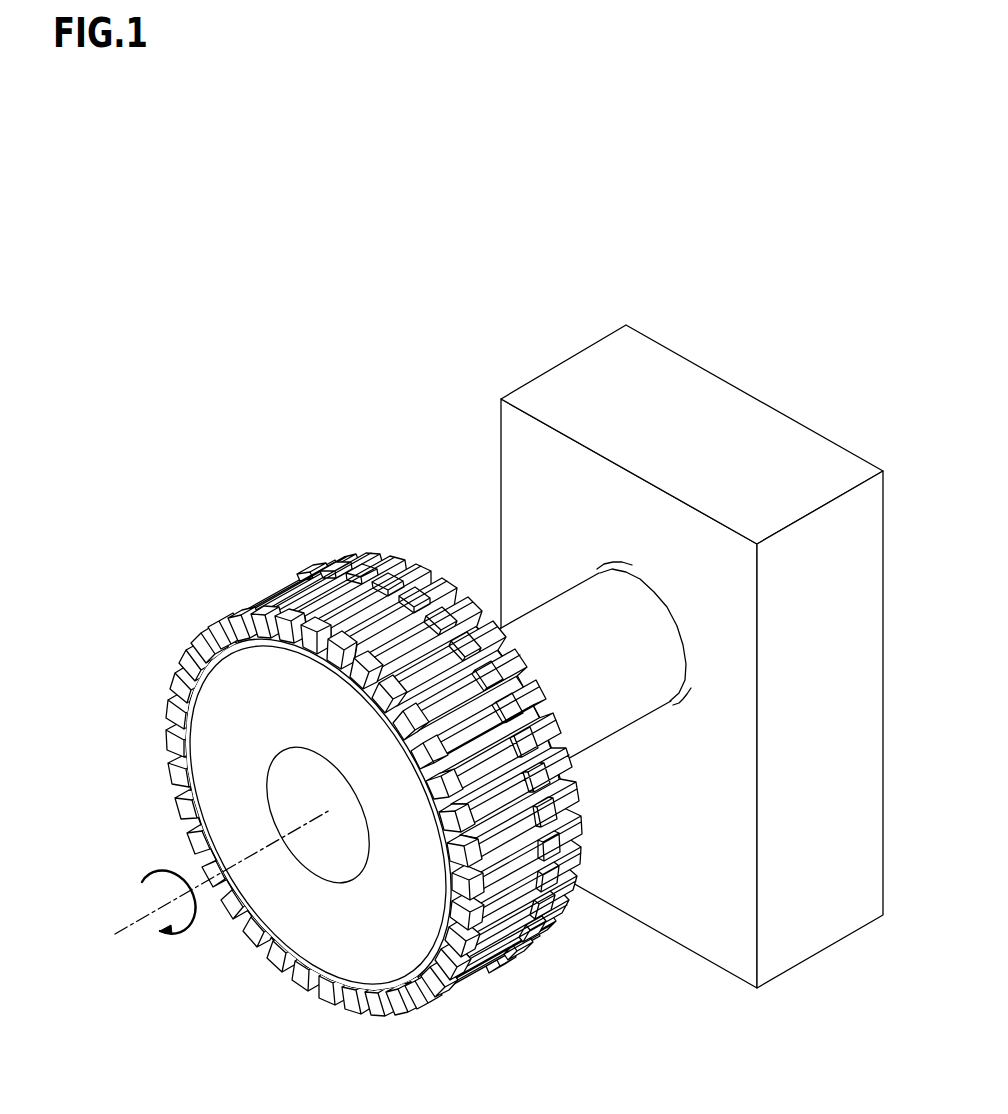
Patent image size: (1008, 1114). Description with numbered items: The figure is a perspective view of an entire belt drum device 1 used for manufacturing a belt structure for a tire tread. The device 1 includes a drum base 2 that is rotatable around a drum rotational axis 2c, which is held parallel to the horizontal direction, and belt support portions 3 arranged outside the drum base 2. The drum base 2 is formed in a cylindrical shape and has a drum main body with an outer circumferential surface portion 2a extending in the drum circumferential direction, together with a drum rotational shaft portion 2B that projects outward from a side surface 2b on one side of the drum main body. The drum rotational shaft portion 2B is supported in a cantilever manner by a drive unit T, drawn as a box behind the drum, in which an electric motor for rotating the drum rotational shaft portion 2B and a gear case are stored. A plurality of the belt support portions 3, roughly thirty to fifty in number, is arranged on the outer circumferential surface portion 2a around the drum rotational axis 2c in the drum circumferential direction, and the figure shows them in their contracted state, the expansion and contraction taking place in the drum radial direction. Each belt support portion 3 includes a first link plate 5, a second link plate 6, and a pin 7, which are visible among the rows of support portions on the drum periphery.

The belt drum device 1 is at (307, 712).
The drum base 2 is at (350, 918).
The outer circumferential surface portion 2a is at (407, 690).
The side surface 2b is at (410, 560).
The drum rotational axis 2c is at (127, 924).
The drum rotational shaft portion 2B is at (605, 675).
The belt support portion 3 is at (375, 741).
The first link plate 5 is at (477, 857).
The second link plate 6 is at (580, 870).
The pin 7 is at (540, 820).
The drive unit T is at (792, 390).